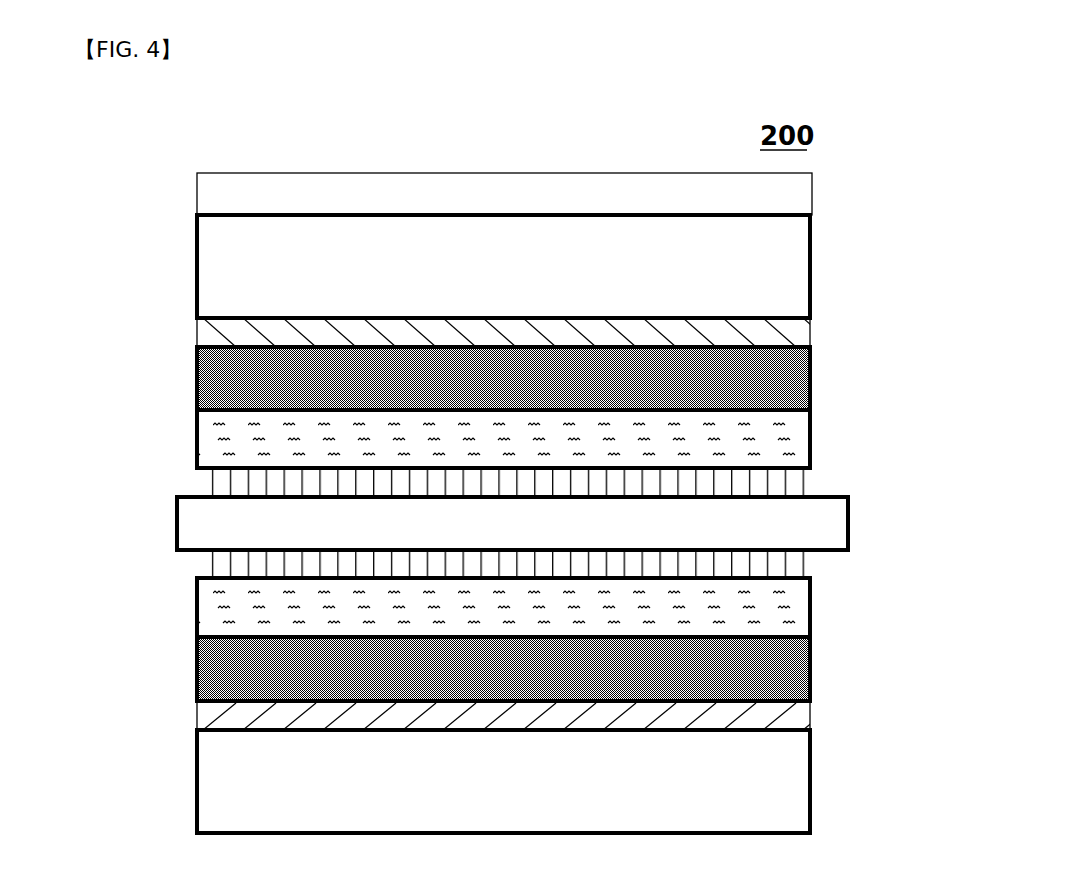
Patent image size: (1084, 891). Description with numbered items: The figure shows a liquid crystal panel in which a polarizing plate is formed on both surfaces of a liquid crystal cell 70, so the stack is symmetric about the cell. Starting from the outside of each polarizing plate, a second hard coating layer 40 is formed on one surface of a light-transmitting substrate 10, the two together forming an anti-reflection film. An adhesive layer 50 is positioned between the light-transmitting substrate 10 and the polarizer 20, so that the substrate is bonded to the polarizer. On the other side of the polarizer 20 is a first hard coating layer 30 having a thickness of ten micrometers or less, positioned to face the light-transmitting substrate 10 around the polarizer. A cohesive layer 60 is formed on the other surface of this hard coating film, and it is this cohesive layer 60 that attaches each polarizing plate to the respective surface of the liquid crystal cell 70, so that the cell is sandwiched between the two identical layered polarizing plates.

The second hard coating layer 40 is at (795, 197).
The light-transmitting substrate 10 is at (800, 269).
The adhesive layer 50 is at (800, 333).
The polarizer 20 is at (800, 383).
The first hard coating layer 30 is at (800, 438).
The cohesive layer 60 is at (805, 487).
The liquid crystal cell 70 is at (825, 523).